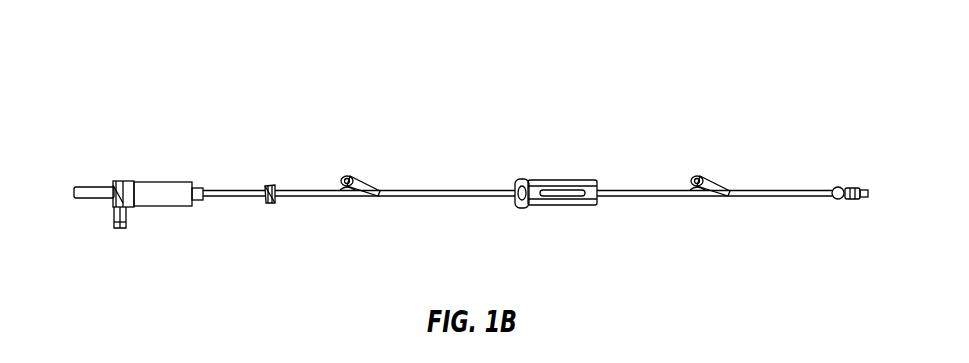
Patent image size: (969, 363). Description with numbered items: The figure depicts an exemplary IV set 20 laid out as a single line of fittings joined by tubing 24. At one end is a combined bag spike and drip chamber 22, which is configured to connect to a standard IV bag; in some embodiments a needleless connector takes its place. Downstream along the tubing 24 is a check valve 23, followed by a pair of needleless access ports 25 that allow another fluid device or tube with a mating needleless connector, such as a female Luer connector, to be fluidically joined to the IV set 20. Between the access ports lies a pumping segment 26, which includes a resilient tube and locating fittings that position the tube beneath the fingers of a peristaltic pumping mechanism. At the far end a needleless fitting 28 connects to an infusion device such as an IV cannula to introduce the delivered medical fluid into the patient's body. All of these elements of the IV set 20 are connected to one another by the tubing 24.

The IV set 20 is at (126, 70).
The combined bag spike and drip chamber 22 is at (160, 187).
The check valve 23 is at (272, 186).
The tubing 24 is at (231, 199).
The Y-site injection port 25 is at (363, 182).
The pumping segment 26 is at (557, 182).
The needleless fitting 28 is at (853, 186).